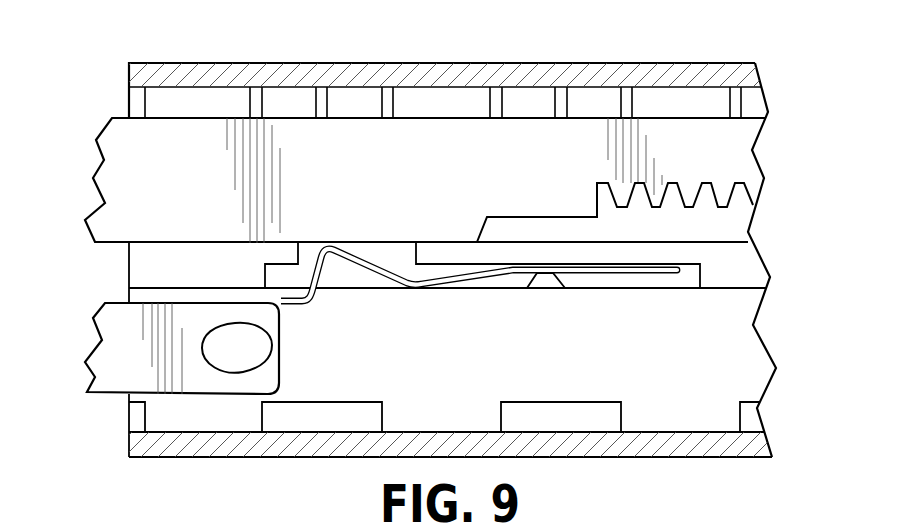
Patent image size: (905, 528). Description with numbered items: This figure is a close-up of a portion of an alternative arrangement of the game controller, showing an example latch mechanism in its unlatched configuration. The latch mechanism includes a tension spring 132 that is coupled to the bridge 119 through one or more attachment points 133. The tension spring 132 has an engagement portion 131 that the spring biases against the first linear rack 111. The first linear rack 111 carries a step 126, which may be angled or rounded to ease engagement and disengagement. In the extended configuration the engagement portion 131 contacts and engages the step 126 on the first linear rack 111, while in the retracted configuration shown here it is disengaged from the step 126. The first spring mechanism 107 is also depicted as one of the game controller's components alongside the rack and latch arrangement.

The bridge 119 is at (443, 63).
The first linear rack 111 is at (460, 190).
The step 126 is at (483, 232).
The engagement portion 131 is at (360, 252).
The tension spring 132 is at (472, 290).
The attachment point 133 is at (562, 282).
The first spring mechanism 107 is at (108, 393).